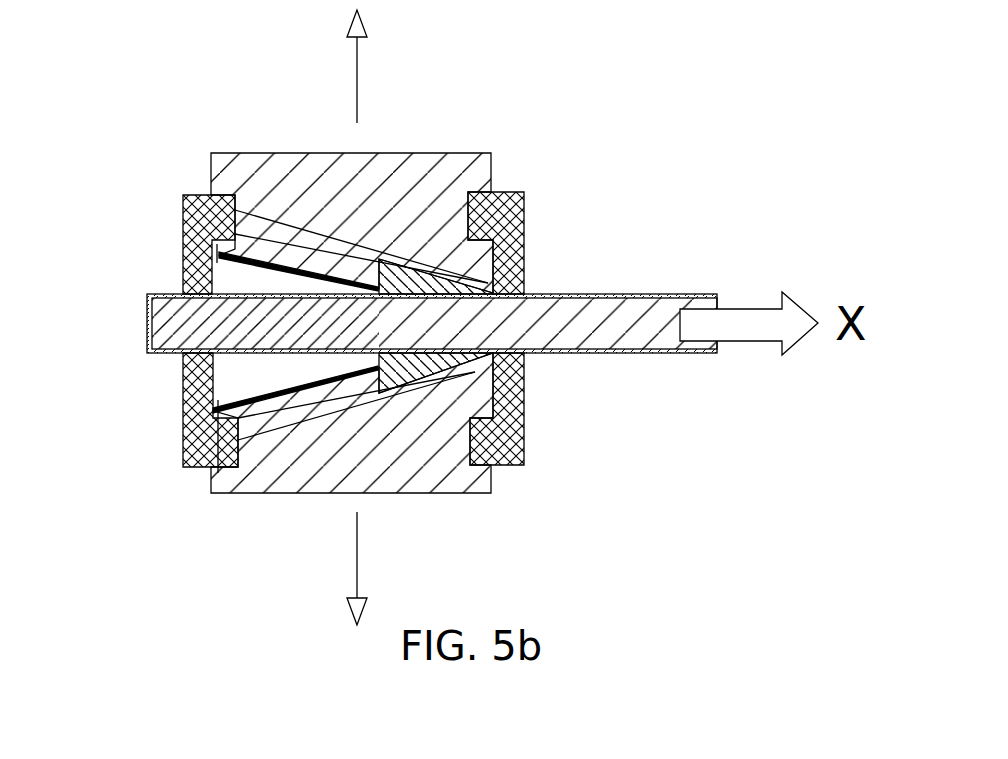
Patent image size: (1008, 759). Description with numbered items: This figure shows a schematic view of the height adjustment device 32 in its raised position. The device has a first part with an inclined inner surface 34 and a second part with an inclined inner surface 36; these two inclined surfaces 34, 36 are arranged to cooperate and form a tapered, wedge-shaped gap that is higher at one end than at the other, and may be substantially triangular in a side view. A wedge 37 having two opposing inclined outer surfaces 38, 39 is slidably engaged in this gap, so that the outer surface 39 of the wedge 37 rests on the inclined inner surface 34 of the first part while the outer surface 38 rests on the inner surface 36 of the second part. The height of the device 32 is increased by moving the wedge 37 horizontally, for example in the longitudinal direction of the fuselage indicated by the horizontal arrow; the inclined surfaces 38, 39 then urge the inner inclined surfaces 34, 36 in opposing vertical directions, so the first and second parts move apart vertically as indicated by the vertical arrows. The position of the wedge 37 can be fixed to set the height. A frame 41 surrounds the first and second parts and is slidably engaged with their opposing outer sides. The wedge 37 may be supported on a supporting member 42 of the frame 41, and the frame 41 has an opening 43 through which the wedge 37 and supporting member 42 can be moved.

The height adjustment device 32 is at (149, 112).
The inclined inner surface 34 is at (262, 400).
The inclined inner surface 36 is at (260, 267).
The wedge 37 is at (440, 373).
The inclined outer surface 38 is at (483, 258).
The inclined outer surface 39 is at (522, 428).
The frame 41 is at (183, 468).
The supporting member 42 is at (626, 294).
The opening 43 is at (182, 293).